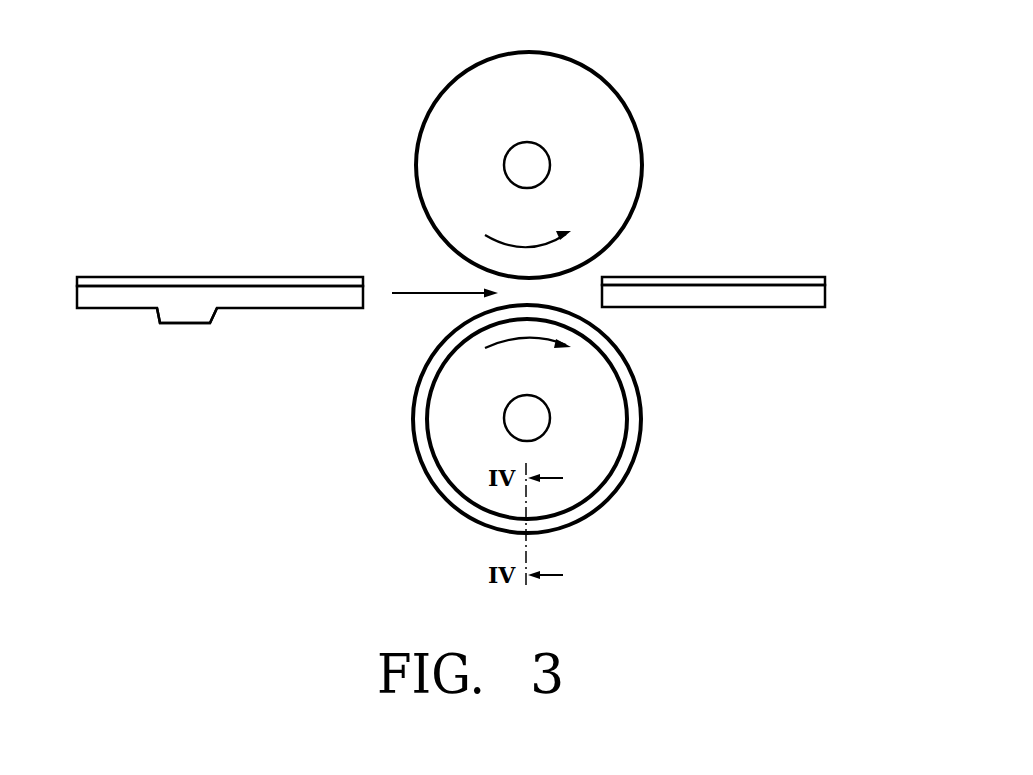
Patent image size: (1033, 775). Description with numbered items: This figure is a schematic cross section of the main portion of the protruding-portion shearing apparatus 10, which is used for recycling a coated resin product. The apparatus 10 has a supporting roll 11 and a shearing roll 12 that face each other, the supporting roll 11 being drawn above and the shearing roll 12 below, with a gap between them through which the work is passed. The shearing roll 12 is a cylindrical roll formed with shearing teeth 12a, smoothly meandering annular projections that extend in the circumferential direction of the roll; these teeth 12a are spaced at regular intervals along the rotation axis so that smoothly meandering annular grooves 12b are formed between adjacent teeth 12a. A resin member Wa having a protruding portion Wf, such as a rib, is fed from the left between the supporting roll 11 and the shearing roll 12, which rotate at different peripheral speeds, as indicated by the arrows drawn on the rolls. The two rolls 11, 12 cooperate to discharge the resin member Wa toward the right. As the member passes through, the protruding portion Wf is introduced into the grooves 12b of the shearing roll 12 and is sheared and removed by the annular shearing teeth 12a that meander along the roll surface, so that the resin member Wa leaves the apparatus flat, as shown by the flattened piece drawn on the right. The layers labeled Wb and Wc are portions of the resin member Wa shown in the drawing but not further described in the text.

The protruding-portion shearing apparatus 10 is at (406, 101).
The supporting roll 11 is at (600, 91).
The shearing roll 12 is at (512, 432).
The shearing teeth 12a is at (416, 440).
The annular grooves 12b is at (455, 496).
The resin member Wa is at (472, 283).
The base plate of workpiece Wb is at (122, 305).
The cover layer of workpiece Wc is at (145, 282).
The protruding portion Wf is at (208, 316).